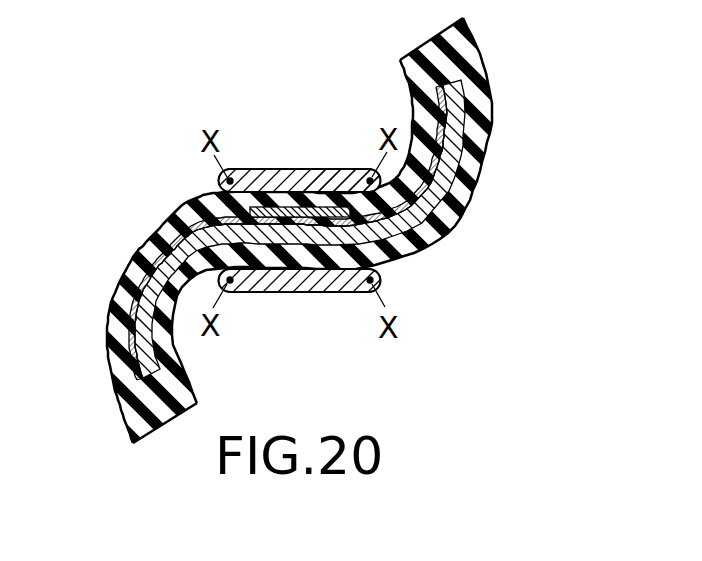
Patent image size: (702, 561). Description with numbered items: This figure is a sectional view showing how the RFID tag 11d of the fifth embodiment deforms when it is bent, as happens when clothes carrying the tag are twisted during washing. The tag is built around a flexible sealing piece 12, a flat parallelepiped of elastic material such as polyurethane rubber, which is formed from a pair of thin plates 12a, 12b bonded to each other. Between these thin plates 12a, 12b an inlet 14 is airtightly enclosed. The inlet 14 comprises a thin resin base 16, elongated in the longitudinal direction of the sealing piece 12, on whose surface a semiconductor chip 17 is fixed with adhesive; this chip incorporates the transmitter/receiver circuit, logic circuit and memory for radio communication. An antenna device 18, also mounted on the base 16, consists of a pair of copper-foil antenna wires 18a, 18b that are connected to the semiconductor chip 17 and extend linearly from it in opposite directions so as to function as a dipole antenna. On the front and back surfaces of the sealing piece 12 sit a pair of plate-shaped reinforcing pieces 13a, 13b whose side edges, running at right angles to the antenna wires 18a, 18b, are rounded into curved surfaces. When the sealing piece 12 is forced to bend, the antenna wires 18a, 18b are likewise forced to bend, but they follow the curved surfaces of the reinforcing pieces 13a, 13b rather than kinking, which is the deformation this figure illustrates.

The RFID tag 11d is at (178, 152).
The sealing piece 12 is at (351, 280).
The thin plate 12a is at (113, 392).
The thin plate 12b is at (181, 372).
The reinforcing piece 13a is at (313, 178).
The reinforcing piece 13b is at (310, 289).
The inlet 14 is at (342, 207).
The base 16 is at (452, 112).
The semiconductor chip 17 is at (267, 197).
The antenna device 18 is at (312, 232).
The antenna wire 18a is at (142, 280).
The antenna wire 18b is at (446, 124).